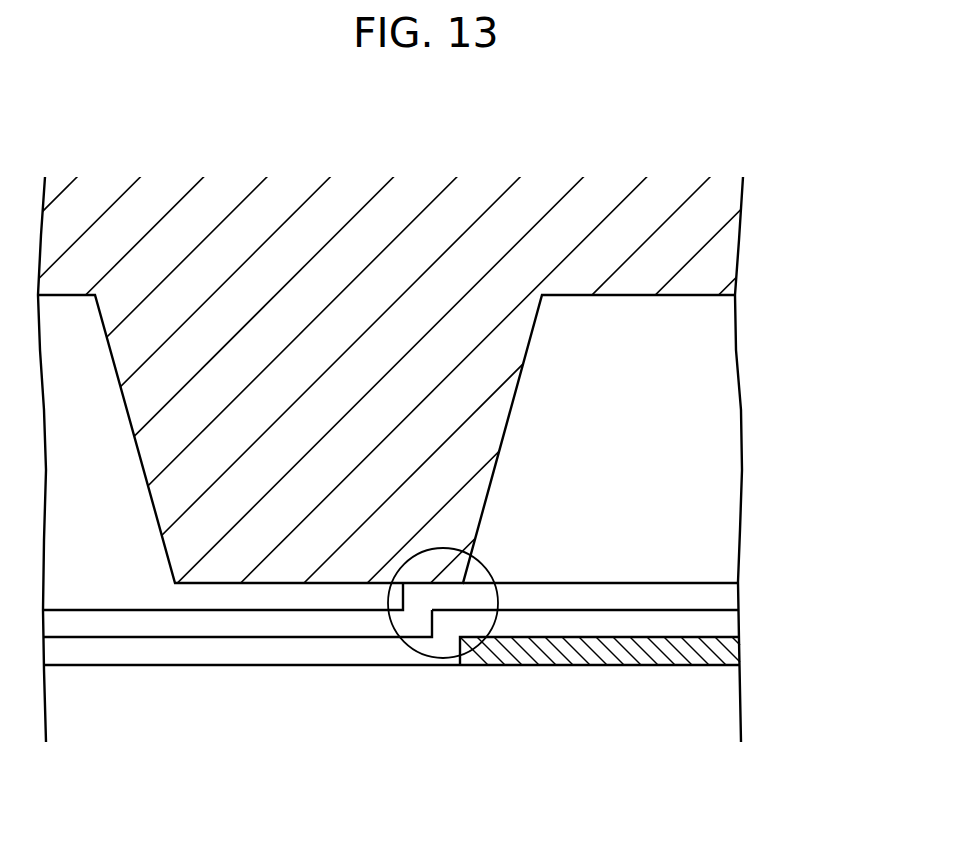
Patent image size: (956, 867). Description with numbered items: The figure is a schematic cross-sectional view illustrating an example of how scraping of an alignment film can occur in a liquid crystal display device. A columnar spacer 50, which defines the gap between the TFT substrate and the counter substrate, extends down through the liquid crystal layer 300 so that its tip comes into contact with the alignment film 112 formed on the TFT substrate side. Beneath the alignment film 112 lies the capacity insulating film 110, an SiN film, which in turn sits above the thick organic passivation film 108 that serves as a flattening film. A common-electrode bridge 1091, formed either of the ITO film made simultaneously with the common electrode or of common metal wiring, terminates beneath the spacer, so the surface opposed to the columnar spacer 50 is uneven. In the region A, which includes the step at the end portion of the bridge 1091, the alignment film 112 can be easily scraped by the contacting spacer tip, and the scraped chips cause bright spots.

The columnar spacer 50 is at (470, 421).
The liquid crystal layer 300 is at (706, 462).
The alignment film 112 is at (720, 594).
The capacity insulating film 110 is at (718, 626).
The common-electrode bridge 1091 is at (722, 651).
The organic passivation film 108 is at (718, 703).
The region A is at (485, 568).